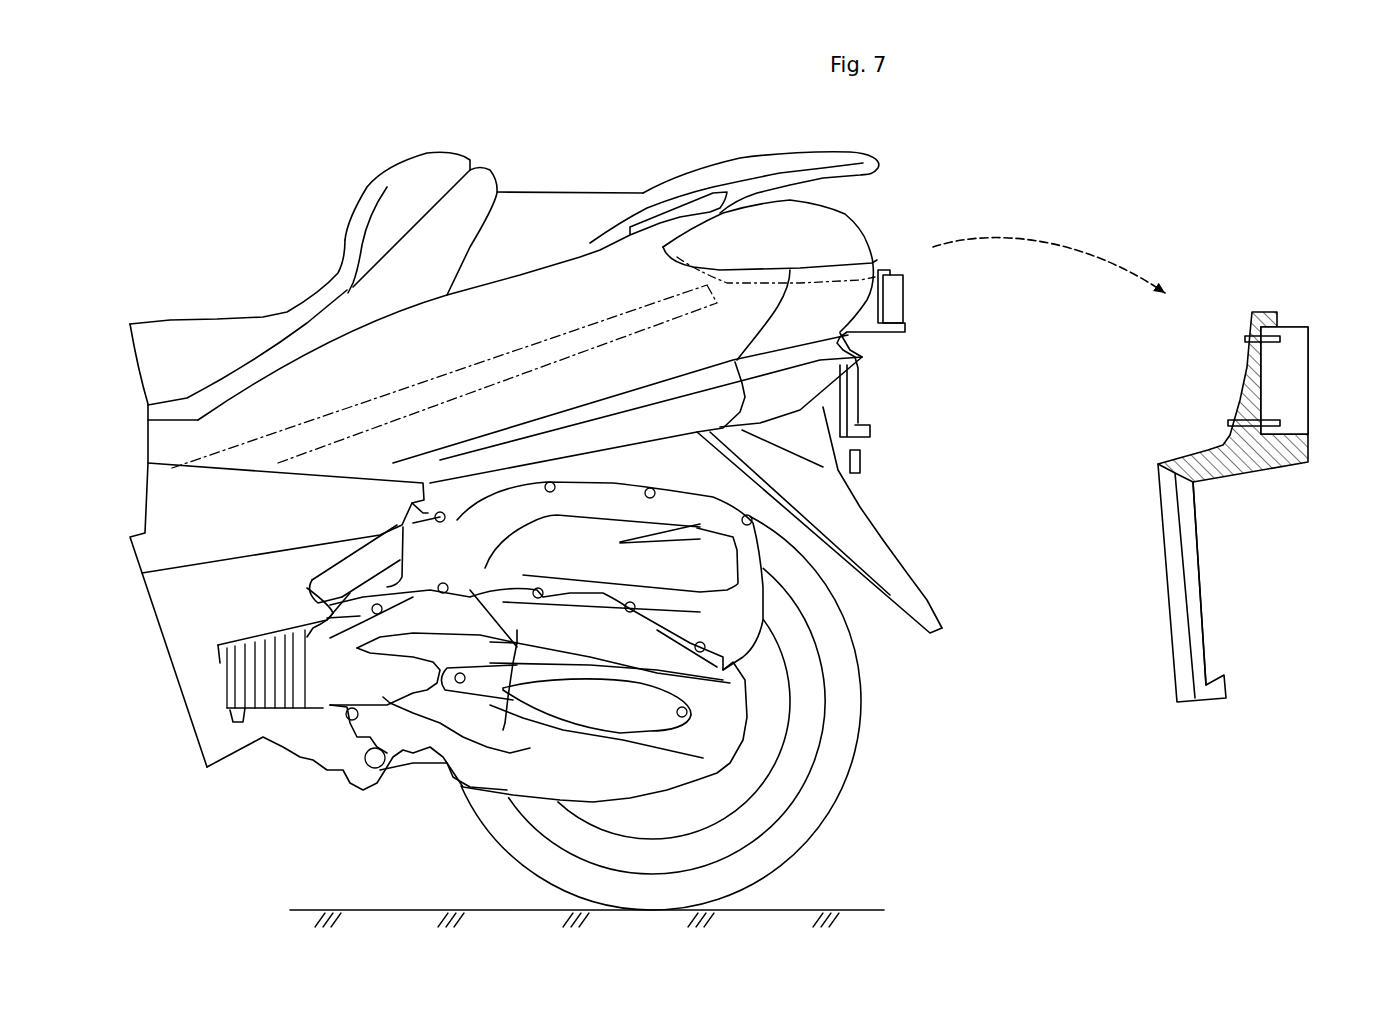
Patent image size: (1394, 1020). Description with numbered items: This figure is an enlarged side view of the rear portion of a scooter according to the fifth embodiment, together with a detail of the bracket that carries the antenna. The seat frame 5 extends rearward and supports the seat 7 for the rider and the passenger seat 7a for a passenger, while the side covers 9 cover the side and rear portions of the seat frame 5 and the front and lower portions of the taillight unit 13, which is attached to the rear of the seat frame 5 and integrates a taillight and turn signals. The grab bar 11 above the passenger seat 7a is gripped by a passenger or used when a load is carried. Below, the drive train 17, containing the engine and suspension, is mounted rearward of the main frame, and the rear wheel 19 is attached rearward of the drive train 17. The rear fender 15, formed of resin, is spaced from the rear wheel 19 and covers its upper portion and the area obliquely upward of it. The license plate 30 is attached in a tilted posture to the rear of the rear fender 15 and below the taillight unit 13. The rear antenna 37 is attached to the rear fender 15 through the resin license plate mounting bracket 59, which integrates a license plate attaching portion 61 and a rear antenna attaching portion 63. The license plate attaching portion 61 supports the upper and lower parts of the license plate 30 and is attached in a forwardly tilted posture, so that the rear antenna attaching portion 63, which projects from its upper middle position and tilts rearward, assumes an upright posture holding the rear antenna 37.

The seat frame 5 is at (521, 345).
The seat 7 is at (218, 332).
The passenger seat 7a is at (555, 197).
The side covers 9 is at (633, 290).
The grab bar 11 is at (836, 140).
The taillight unit 13 is at (862, 228).
The rear fender 15 is at (948, 640).
The drive train 17 is at (290, 777).
The rear wheel 19 is at (833, 788).
The license plate 30 is at (860, 397).
The rear antenna 37 is at (905, 313).
The license plate mounting bracket 59 is at (900, 352).
The license plate attaching portion 61 is at (1156, 492).
The rear antenna attaching portion 63 is at (1222, 406).